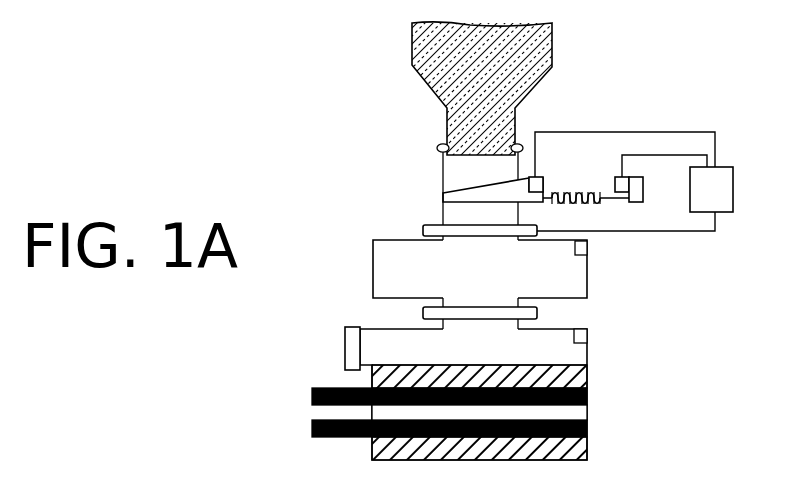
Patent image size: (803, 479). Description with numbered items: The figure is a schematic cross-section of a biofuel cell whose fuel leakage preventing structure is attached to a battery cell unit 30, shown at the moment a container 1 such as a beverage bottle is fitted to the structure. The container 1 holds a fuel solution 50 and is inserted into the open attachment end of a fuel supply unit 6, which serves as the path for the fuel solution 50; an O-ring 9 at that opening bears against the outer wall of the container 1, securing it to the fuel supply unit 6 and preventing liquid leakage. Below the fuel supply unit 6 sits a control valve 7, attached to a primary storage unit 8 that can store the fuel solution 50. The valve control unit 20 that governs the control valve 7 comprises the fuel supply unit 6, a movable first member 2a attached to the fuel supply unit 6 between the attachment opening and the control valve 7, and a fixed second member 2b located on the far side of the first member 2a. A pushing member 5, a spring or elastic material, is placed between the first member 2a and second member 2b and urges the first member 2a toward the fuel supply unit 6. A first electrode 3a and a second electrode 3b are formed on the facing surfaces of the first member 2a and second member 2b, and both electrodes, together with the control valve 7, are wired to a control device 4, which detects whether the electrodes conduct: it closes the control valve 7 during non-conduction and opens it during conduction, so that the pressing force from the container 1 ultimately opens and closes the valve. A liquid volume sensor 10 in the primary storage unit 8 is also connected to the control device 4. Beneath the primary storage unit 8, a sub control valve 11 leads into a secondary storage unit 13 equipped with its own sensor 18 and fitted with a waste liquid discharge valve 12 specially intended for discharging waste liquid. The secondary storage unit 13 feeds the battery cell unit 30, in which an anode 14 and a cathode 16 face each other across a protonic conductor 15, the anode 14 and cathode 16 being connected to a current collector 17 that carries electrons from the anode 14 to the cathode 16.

The container 1 is at (553, 36).
The fuel solution 50 is at (548, 62).
The O-ring 9 is at (437, 149).
The fuel supply unit 6 is at (443, 191).
The first member 2a is at (523, 175).
The first electrode 3a is at (538, 177).
The control valve 7 is at (423, 231).
The primary storage unit 8 is at (587, 278).
The sensor 10 is at (587, 247).
The sub control valve 11 is at (423, 312).
The waste liquid discharge valve 12 is at (345, 338).
The secondary storage unit 13 is at (587, 353).
The sensor 18 is at (587, 334).
The anode 14 is at (587, 379).
The protonic conductor 15 is at (587, 412).
The cathode 16 is at (587, 447).
The current collector 17 is at (312, 398).
The battery cell unit 30 is at (483, 412).
The valve control unit 20 is at (651, 155).
The control device 4 is at (733, 196).
The pushing member 5 is at (600, 203).
The second electrode 3b is at (628, 177).
The second member 2b is at (643, 196).